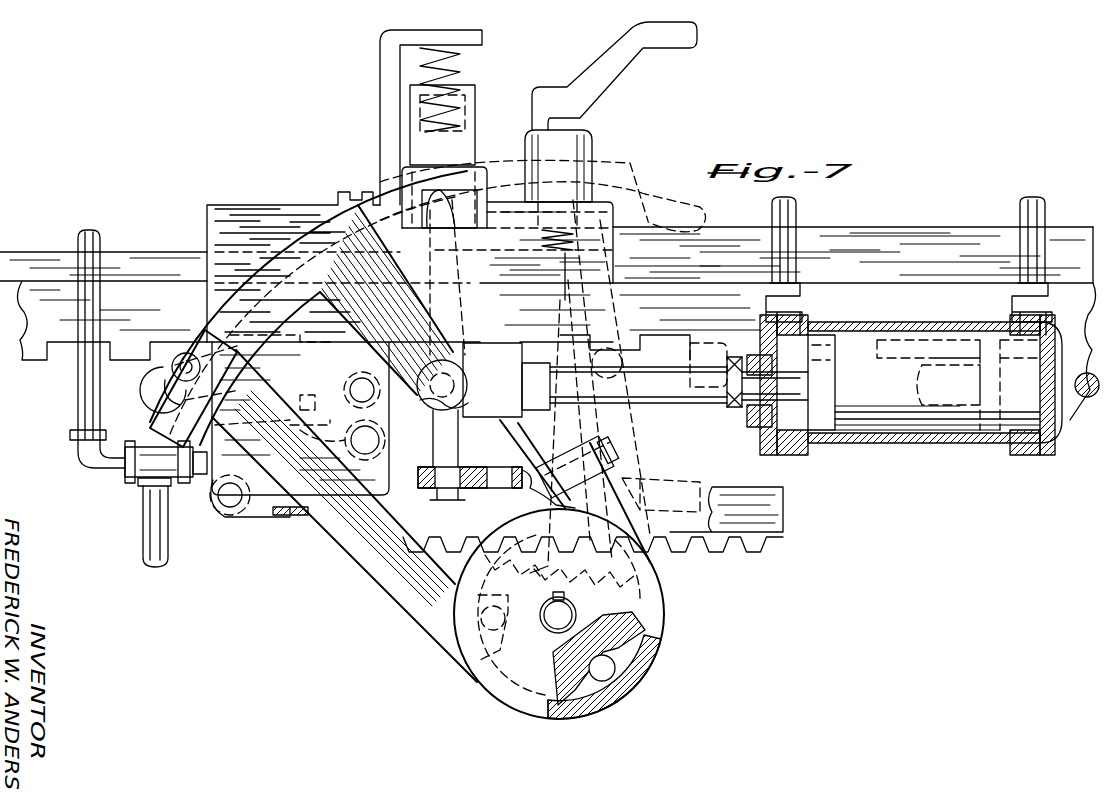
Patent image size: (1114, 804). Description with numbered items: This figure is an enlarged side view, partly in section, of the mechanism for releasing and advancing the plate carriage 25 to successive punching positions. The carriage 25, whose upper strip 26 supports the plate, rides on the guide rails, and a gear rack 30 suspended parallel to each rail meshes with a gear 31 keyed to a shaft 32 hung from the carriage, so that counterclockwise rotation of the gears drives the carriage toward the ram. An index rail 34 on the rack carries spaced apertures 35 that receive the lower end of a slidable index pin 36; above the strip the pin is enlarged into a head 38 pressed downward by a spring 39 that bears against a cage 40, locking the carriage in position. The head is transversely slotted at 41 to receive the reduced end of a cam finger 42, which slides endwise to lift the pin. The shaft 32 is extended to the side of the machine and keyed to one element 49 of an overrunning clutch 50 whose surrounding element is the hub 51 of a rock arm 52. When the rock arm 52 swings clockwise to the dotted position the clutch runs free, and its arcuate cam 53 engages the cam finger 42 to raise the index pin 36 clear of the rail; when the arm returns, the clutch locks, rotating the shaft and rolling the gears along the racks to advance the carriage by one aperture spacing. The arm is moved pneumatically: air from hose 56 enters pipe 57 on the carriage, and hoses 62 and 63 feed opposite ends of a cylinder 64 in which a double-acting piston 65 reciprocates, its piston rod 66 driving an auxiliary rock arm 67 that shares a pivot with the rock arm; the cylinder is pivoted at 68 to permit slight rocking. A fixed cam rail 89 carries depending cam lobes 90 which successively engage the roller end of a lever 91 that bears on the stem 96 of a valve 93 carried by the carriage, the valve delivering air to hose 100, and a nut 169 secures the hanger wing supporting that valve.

The carriage 25 is at (950, 210).
The upper strip 26 is at (25, 252).
The gear rack 30 is at (735, 550).
The gear 31 is at (645, 592).
The shaft 32 is at (548, 626).
The index rail 34 is at (468, 490).
The apertures 35 is at (420, 490).
The index pin 36 is at (455, 305).
The head 38 is at (466, 140).
The spring 39 is at (462, 72).
The cage 40 is at (378, 66).
The slot 41 is at (478, 194).
The cam finger 42 is at (452, 170).
The clutch element 49 is at (550, 722).
The overrunning clutch 50 is at (657, 680).
The hub 51 is at (605, 705).
The rock arm 52 is at (382, 572).
The arcuate cam 53 is at (393, 236).
The air hose 56 is at (142, 536).
The pipe 57 is at (90, 228).
The hose 62 is at (1042, 222).
The hose 63 is at (792, 222).
The cylinder 64 is at (885, 445).
The piston 65 is at (820, 408).
The piston rod 66 is at (798, 396).
The auxiliary rock arm 67 is at (515, 420).
The pivot 68 is at (1084, 413).
The cam rail 89 is at (64, 316).
The cam lobe 90 is at (155, 355).
The lever 91 is at (280, 360).
The valve 93 is at (262, 508).
The stem 96 is at (345, 398).
The air hose 100 is at (389, 490).
The nut 169 is at (628, 68).